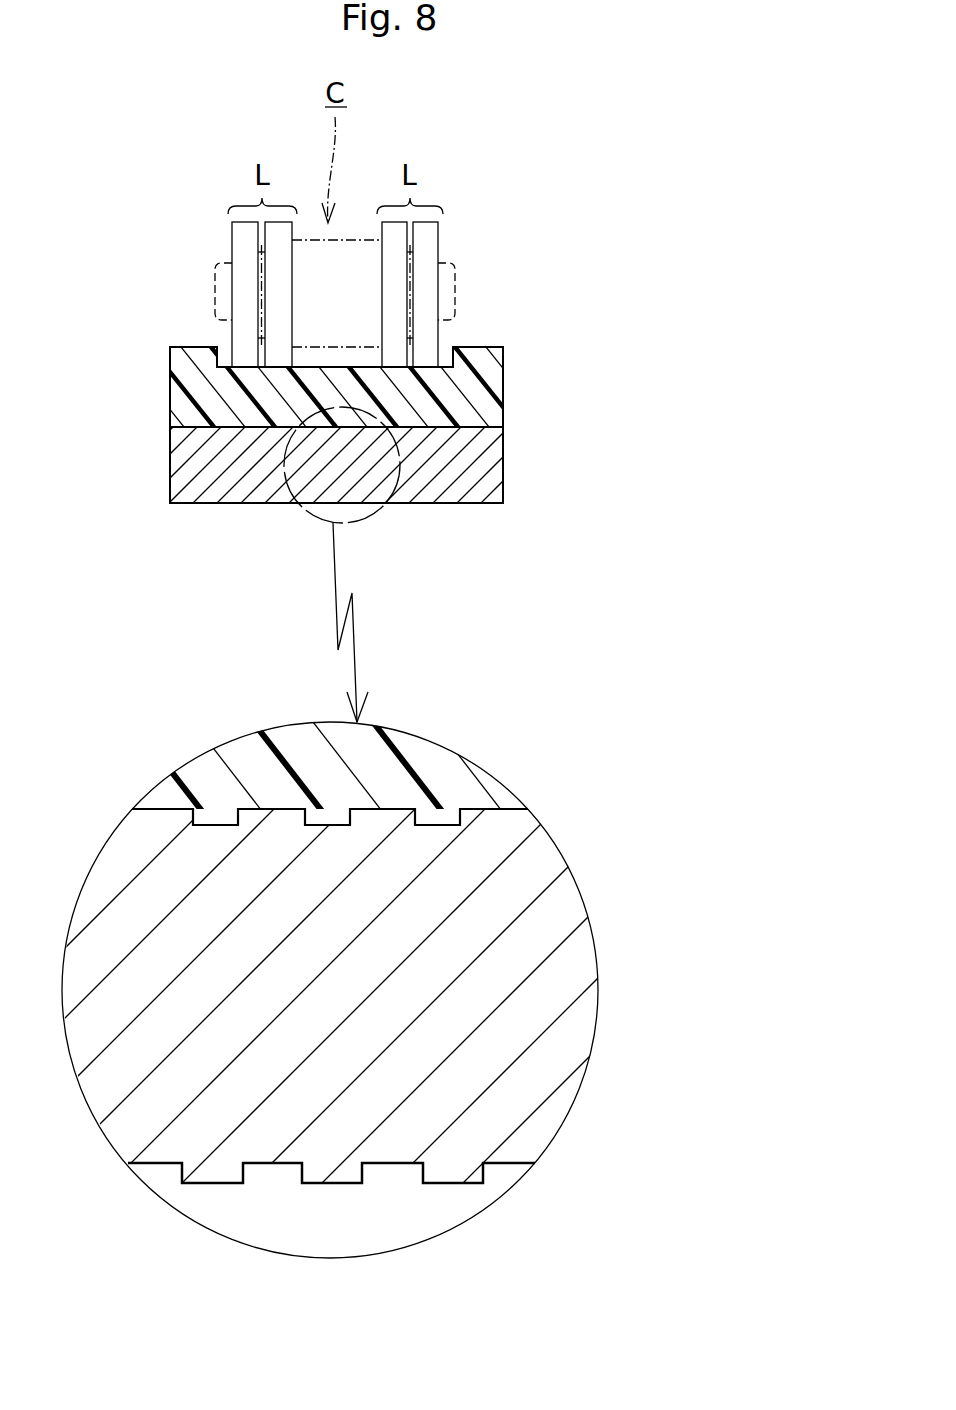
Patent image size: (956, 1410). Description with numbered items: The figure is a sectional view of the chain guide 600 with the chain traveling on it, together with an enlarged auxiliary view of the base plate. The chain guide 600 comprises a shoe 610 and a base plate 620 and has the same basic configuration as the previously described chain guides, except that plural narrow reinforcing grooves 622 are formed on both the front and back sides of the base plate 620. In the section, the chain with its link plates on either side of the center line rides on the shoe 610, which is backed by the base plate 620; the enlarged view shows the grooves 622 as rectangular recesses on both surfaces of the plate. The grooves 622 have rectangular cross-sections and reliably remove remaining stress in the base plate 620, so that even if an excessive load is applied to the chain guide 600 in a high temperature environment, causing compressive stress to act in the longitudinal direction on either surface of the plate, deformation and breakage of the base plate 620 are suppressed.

The chain guide 600 is at (643, 360).
The shoe 610 is at (470, 390).
The base plate 620 is at (488, 465).
The reinforcing grooves 622 is at (222, 822).